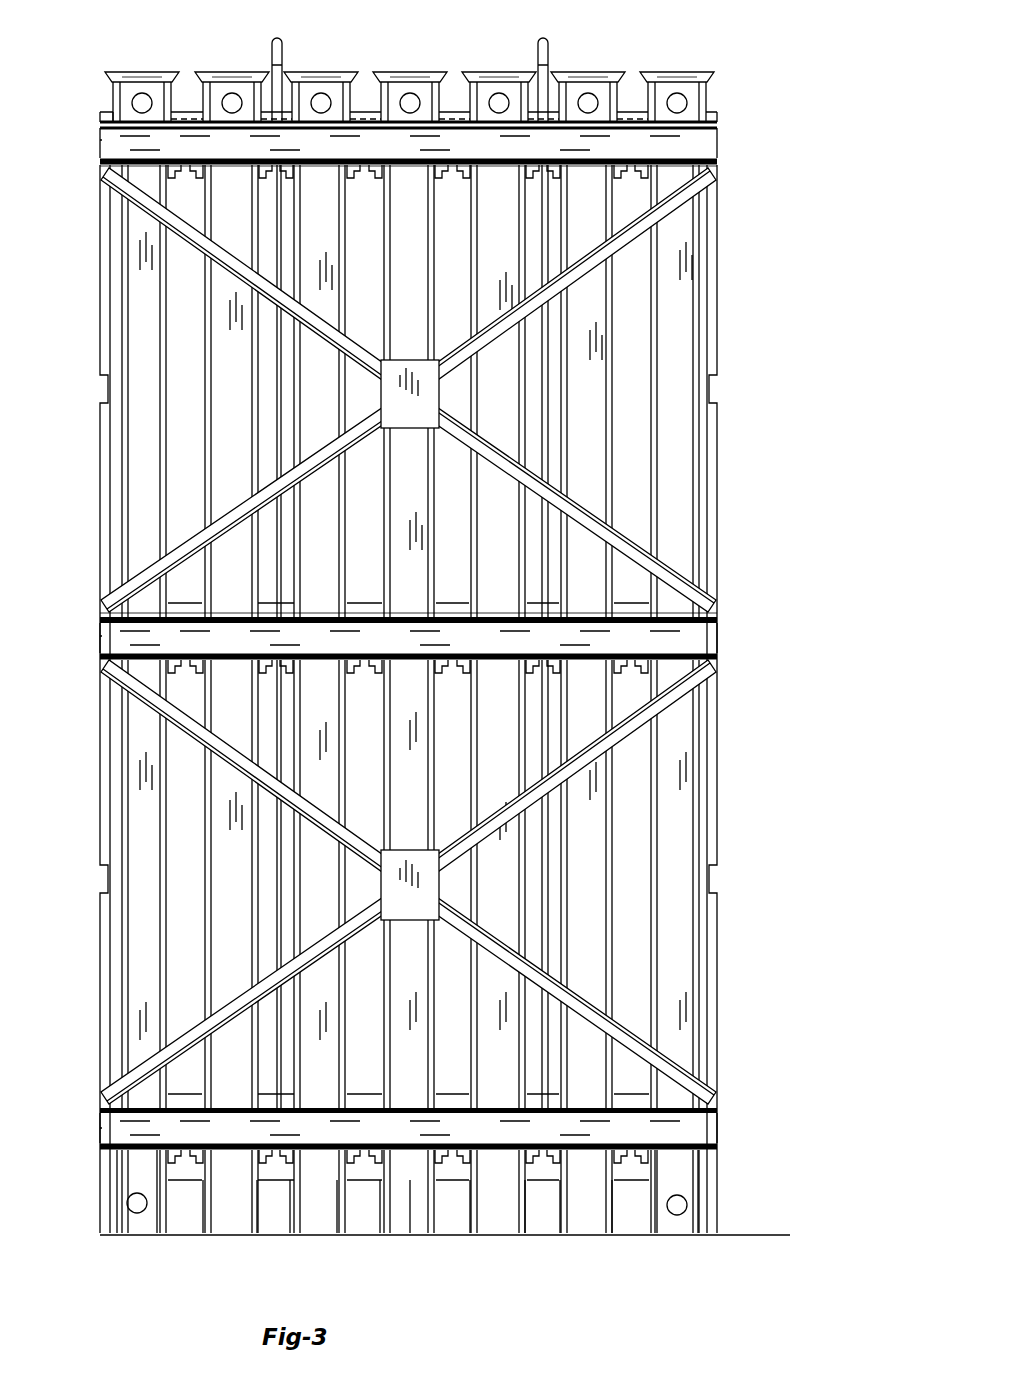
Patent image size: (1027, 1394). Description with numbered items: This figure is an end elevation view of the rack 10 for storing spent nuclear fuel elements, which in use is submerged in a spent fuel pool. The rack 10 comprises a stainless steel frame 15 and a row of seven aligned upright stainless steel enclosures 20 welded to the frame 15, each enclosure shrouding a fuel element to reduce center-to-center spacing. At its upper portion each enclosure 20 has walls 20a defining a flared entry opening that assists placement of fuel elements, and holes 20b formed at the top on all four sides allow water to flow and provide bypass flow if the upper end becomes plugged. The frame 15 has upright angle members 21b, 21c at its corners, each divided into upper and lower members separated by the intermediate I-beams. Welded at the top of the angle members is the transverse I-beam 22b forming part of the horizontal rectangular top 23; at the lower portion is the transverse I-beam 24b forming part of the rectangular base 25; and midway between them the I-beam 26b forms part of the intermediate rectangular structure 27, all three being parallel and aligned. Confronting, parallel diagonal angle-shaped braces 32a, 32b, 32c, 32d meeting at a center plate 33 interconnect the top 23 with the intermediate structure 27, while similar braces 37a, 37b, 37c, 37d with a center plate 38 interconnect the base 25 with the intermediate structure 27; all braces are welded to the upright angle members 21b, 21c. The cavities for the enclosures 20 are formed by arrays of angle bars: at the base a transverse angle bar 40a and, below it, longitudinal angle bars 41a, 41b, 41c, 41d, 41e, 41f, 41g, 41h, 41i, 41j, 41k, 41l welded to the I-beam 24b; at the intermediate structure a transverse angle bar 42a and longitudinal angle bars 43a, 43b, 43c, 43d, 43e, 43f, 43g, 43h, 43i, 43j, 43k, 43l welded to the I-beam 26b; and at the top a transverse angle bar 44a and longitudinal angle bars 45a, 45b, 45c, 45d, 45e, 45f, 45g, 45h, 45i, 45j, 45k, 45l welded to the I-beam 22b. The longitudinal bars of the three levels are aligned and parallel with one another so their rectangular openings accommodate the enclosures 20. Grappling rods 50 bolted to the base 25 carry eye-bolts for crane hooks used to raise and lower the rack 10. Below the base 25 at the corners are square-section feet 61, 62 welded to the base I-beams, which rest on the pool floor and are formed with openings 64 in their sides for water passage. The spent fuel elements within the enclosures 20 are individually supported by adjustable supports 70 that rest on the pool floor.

The rack 10 is at (738, 56).
The frame 15 is at (722, 167).
The upright enclosure 20 is at (399, 75).
The walls 20a is at (110, 77).
The holes 20b is at (136, 103).
The upright angle member 21b is at (105, 363).
The upright angle member 21c is at (712, 343).
The I-beam 22b is at (104, 146).
The top 23 is at (722, 145).
The I-beam 24b is at (104, 1130).
The base 25 is at (722, 1132).
The I-beam 26b is at (104, 638).
The intermediate rectangular structure 27 is at (722, 638).
The diagonal angle-shaped brace 32a is at (150, 203).
The diagonal angle-shaped brace 32b is at (680, 203).
The diagonal angle-shaped brace 32c is at (652, 560).
The diagonal angle-shaped brace 32d is at (175, 560).
The center plate 33 is at (406, 360).
The diagonal angle-shaped brace 37a is at (148, 698).
The diagonal angle-shaped brace 37b is at (688, 688).
The diagonal angle-shaped brace 37c is at (655, 1058).
The diagonal angle-shaped brace 37d is at (170, 1053).
The center plate 38 is at (406, 850).
The angle bar 40a is at (104, 1108).
The angle bar 41a is at (150, 1149).
The angle bar 41b is at (190, 1150).
The angle bar 41c is at (256, 1150).
The angle bar 41d is at (290, 1150).
The angle bar 41e is at (342, 1136).
The angle bar 41f is at (372, 1150).
The angle bar 41g is at (430, 1150).
The angle bar 41h is at (465, 1150).
The angle bar 41i is at (530, 1150).
The angle bar 41j is at (556, 1150).
The angle bar 41k is at (626, 1150).
The angle bar 41l is at (645, 1158).
The angle bar 42a is at (104, 613).
The angle bar 43a is at (110, 661).
The angle bar 43b is at (190, 660).
The angle bar 43c is at (256, 660).
The angle bar 43d is at (290, 660).
The angle bar 43e is at (340, 660).
The angle bar 43f is at (372, 660).
The angle bar 43g is at (430, 660).
The angle bar 43h is at (465, 660).
The angle bar 43i is at (530, 660).
The angle bar 43j is at (556, 660).
The angle bar 43k is at (626, 660).
The angle bar 43l is at (690, 665).
The angle bar 44a is at (100, 121).
The angle bar 45a is at (110, 164).
The angle bar 45b is at (190, 165).
The angle bar 45c is at (256, 165).
The angle bar 45d is at (290, 165).
The angle bar 45e is at (354, 150).
The angle bar 45f is at (372, 165).
The angle bar 45g is at (440, 150).
The angle bar 45h is at (465, 165).
The angle bar 45i is at (530, 165).
The angle bar 45j is at (562, 150).
The angle bar 45k is at (626, 165).
The angle bar 45l is at (643, 165).
The grappling rod 50 is at (286, 44).
The foot 61 is at (106, 1183).
The foot 62 is at (710, 1186).
The openings 64 is at (134, 1203).
The adjustable support 70 is at (293, 1205).